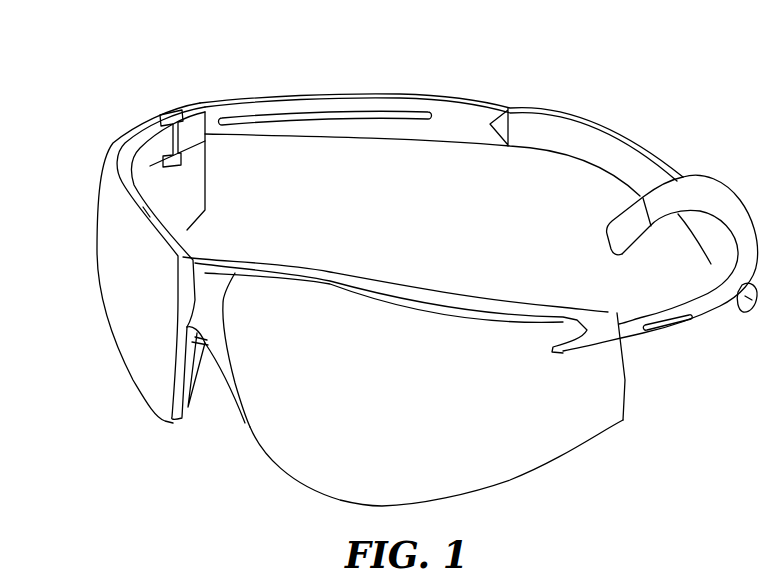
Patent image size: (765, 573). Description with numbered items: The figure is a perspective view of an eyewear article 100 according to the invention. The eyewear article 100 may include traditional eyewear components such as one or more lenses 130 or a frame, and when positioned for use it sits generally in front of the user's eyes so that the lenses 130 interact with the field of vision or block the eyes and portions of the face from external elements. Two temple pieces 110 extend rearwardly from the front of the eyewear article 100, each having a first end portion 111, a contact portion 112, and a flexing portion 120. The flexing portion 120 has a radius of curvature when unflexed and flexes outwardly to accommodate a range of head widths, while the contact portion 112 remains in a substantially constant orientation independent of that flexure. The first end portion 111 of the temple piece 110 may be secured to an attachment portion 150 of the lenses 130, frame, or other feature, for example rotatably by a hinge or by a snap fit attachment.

The eyewear article 100 is at (113, 92).
The temple piece 110 is at (520, 87).
The first end portion 111 is at (212, 110).
The contact portion 112 is at (620, 168).
The flexing portion 120 is at (293, 92).
The lens 130 is at (482, 467).
The attachment portion 150 is at (180, 107).